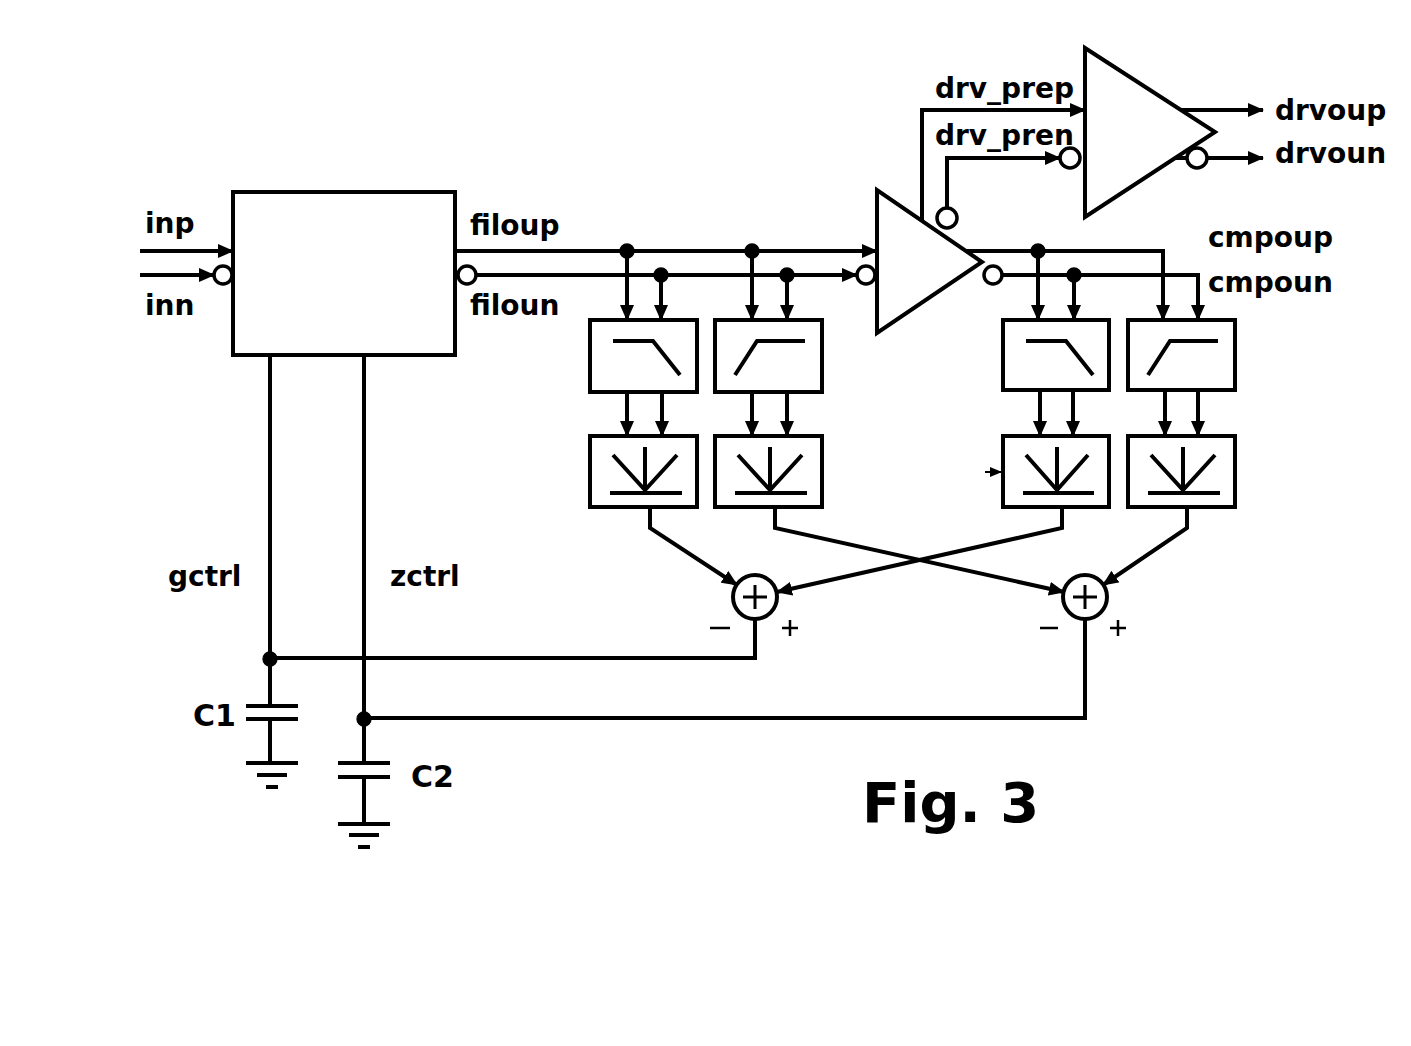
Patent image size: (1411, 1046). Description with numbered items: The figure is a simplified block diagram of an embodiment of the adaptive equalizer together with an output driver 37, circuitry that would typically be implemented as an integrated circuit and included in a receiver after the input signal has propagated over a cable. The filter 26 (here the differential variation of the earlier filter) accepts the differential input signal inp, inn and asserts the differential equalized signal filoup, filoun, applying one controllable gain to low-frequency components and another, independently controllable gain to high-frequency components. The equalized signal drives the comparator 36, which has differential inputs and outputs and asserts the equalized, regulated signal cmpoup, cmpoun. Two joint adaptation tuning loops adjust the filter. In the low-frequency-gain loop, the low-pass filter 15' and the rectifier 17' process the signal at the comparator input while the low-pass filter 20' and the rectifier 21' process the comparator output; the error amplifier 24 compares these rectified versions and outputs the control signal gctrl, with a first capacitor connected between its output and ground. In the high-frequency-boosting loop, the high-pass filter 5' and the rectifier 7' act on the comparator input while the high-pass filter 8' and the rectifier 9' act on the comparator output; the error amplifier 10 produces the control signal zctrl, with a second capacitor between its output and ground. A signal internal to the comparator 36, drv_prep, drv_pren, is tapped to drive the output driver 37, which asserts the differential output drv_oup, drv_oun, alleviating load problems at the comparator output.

The filter 26 is at (232, 360).
The low-pass filter 15' is at (631, 265).
The high-pass filter 5' is at (759, 265).
The comparator 36 is at (868, 228).
The output driver 37 is at (1150, 76).
The low-pass filter 20' is at (990, 303).
The high-pass filter 8' is at (1254, 318).
The rectifier 17' is at (586, 493).
The rectifier 7' is at (672, 522).
The rectifier 21' is at (989, 486).
The rectifier 9' is at (1237, 471).
The error amplifier 24 is at (765, 560).
The error amplifier 10 is at (1083, 557).